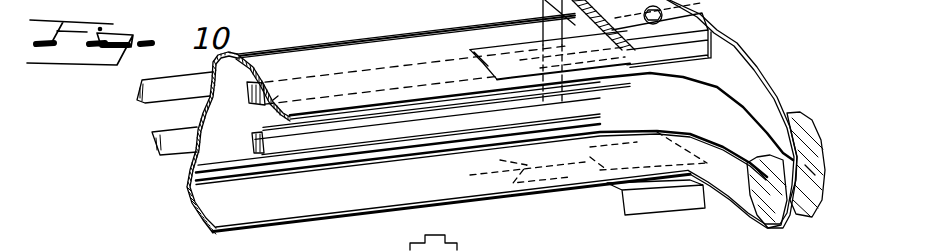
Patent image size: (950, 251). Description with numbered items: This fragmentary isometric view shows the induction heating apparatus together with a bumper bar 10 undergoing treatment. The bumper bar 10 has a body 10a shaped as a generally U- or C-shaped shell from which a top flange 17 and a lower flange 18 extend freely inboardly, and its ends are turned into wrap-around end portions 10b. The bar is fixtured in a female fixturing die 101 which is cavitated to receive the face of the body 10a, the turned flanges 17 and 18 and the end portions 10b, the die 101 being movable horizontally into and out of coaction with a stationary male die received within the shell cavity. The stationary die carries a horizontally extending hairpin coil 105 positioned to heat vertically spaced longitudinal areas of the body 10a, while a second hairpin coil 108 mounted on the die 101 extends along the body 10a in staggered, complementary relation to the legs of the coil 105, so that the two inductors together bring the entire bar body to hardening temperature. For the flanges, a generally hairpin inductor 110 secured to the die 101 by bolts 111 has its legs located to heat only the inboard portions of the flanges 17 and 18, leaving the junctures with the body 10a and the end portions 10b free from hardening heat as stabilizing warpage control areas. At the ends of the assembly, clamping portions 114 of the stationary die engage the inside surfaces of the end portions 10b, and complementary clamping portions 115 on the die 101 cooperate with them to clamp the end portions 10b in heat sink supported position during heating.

The bumper bar 10 is at (744, 35).
The bumper bar body 10a is at (391, 126).
The wrap-around end portions 10b is at (793, 113).
The top flange 17 is at (387, 97).
The lower flange 18 is at (220, 207).
The female fixturing die 101 is at (535, 2).
The hairpin coil 105 is at (268, 104).
The hairpin coil 108 is at (157, 97).
The hairpin inductor 110 is at (505, 74).
The bolts 111 is at (457, 248).
The clamping portions 114 is at (772, 192).
The clamping portions 115 is at (813, 177).